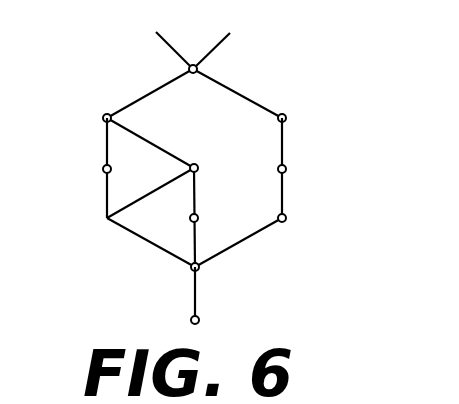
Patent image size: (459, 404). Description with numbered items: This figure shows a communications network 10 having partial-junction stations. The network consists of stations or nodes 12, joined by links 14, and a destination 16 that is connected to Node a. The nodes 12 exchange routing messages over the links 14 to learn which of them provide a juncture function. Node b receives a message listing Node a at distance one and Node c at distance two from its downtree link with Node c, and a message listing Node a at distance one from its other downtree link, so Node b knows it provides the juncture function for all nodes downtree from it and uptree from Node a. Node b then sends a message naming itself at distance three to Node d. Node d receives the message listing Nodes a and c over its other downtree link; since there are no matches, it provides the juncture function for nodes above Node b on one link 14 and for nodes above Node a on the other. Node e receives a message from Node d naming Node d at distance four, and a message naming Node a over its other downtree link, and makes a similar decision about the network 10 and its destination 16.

The communications network 10 is at (312, 108).
The stations or nodes 12 is at (288, 175).
The links 14 is at (103, 151).
The destination 16 is at (190, 320).